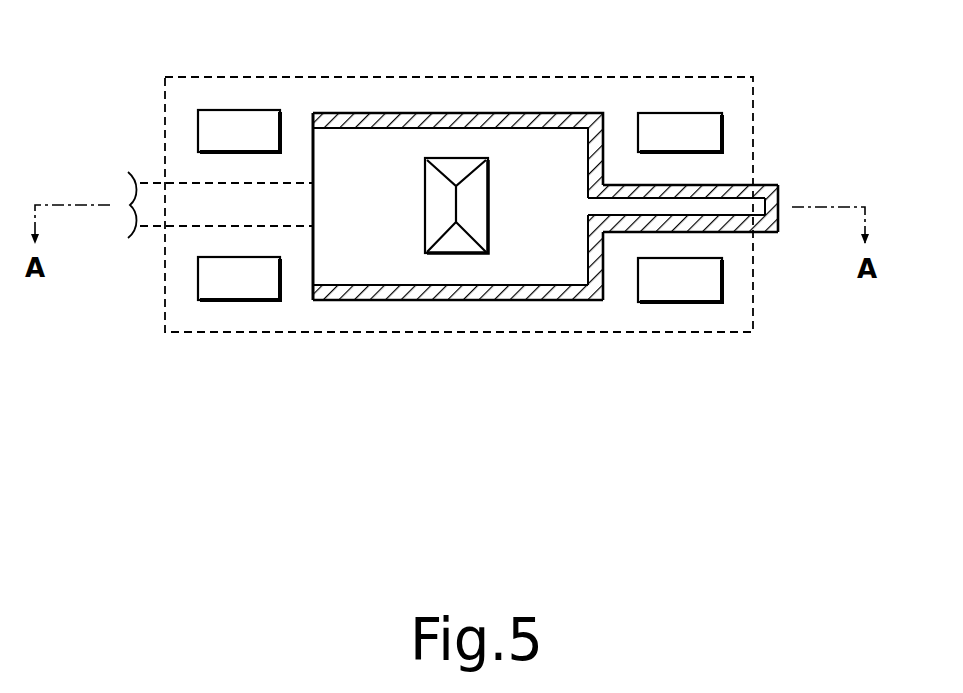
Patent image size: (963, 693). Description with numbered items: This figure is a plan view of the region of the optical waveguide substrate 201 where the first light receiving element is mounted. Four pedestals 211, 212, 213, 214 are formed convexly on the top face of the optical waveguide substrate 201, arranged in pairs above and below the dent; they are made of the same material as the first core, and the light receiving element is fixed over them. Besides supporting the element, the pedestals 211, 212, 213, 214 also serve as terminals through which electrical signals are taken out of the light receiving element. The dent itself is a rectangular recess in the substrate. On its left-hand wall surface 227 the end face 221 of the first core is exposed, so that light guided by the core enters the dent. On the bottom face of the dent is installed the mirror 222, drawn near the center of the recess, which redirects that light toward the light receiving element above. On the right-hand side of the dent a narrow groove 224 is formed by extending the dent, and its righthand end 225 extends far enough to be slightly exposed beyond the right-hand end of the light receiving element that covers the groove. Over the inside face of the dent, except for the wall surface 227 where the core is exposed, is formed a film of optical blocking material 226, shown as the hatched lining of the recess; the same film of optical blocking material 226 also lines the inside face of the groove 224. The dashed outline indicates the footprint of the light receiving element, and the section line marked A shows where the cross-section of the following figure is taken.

The optical waveguide substrate 201 is at (437, 397).
The pedestal 211 is at (239, 110).
The pedestal 212 is at (238, 300).
The pedestal 213 is at (680, 113).
The pedestal 214 is at (682, 302).
The end face 221 is at (313, 195).
The mirror 222 is at (490, 200).
The groove 224 is at (717, 203).
The righthand end 225 is at (786, 186).
The film of optical blocking material 226 is at (542, 300).
The wall surface 227 is at (313, 248).